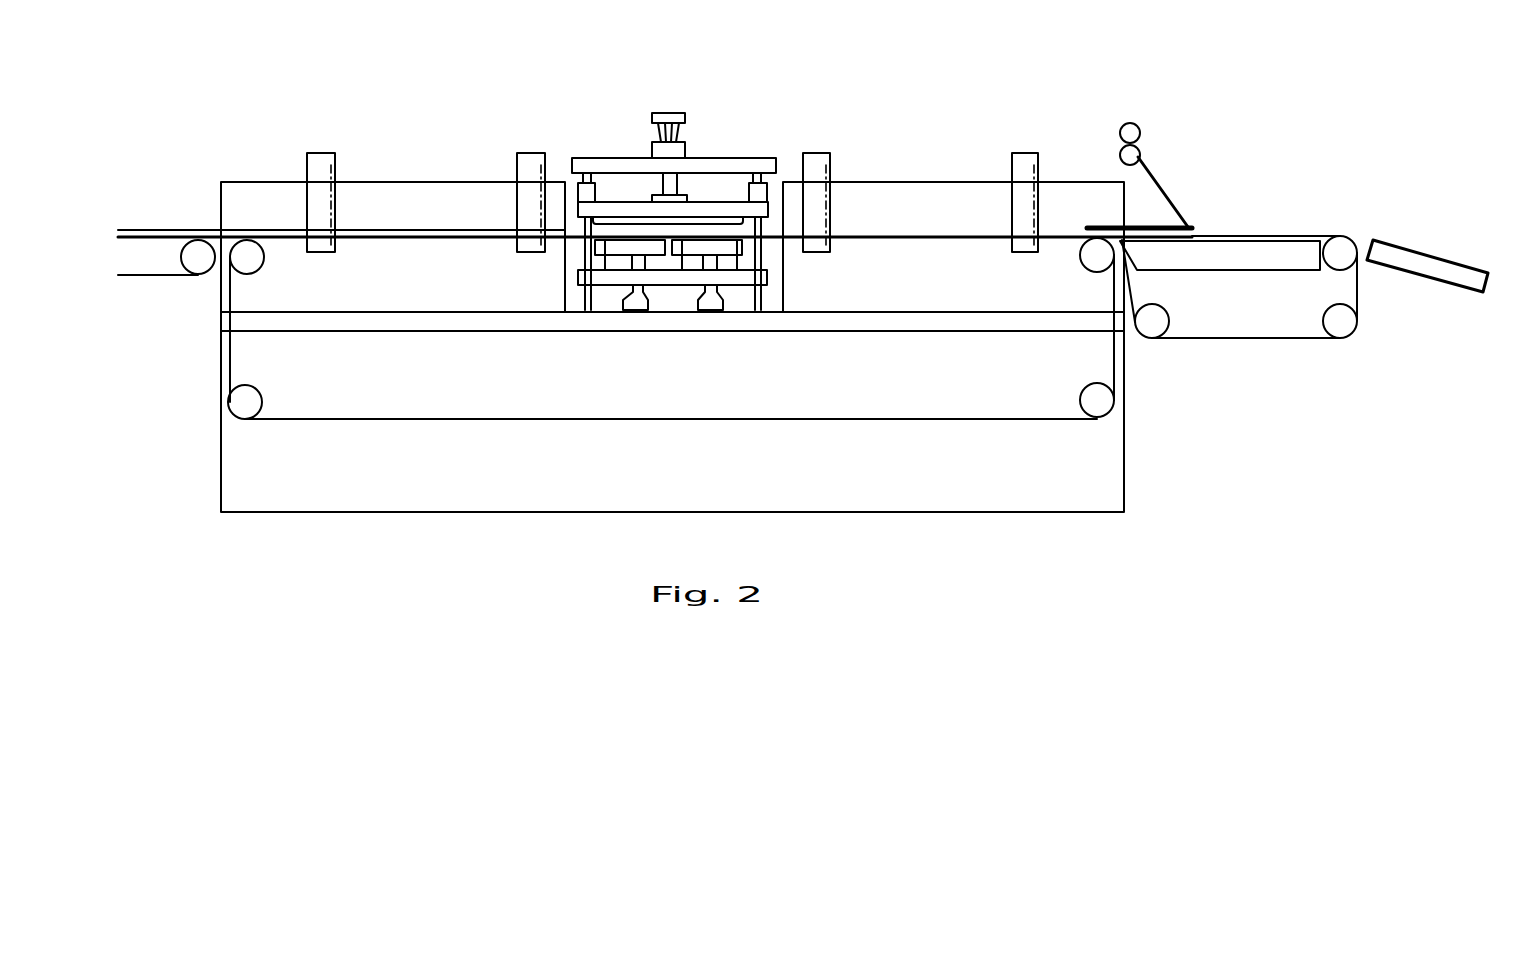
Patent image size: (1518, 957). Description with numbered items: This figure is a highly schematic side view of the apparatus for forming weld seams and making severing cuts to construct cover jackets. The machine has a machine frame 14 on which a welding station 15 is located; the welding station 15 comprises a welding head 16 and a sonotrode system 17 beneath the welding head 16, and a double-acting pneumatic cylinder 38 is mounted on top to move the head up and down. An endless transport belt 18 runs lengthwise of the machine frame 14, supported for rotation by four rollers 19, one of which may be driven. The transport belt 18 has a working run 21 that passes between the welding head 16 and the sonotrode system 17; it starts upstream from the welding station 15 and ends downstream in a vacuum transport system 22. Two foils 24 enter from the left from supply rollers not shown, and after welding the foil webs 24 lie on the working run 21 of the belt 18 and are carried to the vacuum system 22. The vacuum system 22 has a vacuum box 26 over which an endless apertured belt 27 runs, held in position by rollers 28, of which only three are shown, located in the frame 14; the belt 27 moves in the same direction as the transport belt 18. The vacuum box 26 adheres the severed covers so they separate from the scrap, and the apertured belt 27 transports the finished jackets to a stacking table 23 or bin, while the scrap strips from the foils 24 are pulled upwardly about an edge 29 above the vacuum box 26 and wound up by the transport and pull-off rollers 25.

The machine frame 14 is at (1125, 467).
The welding station 15 is at (737, 167).
The welding head 16 is at (720, 199).
The sonotrode system 17 is at (797, 270).
The transport belt 18 is at (805, 420).
The rollers 19 is at (257, 266).
The working run 21 is at (930, 239).
The vacuum transport system 22 is at (1238, 277).
The stacking table 23 is at (1438, 277).
The foils 24 is at (383, 232).
The transport and pull-off rollers 25 is at (1138, 125).
The vacuum box 26 is at (1235, 256).
The apertured belt 27 is at (1272, 340).
The rollers 28 is at (1160, 336).
The edge 29 is at (1186, 224).
The double-acting pneumatic cylinder 38 is at (668, 116).